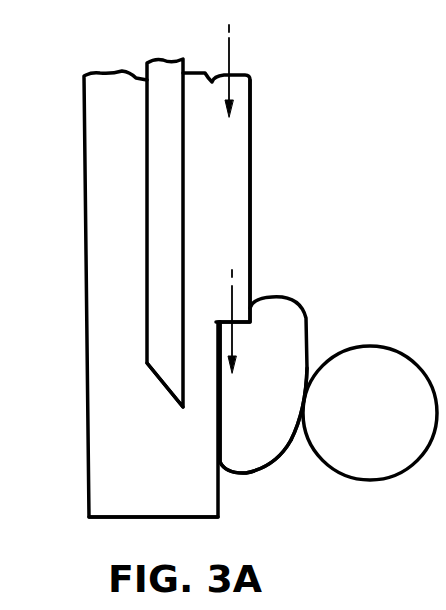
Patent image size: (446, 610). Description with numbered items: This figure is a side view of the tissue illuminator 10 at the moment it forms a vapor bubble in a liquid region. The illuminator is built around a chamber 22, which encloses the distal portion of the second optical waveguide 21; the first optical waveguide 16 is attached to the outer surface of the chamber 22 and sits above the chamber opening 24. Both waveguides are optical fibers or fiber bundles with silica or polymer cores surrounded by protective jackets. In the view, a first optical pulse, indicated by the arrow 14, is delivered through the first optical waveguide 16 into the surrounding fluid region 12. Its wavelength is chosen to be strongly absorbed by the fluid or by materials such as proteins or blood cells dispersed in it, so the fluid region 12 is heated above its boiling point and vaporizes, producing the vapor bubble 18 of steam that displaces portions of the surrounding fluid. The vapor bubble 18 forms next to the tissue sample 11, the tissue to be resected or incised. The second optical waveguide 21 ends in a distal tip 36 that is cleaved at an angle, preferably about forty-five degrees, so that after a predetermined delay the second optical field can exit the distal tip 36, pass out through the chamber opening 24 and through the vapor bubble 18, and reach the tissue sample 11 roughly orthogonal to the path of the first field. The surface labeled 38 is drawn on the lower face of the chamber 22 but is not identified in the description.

The tissue illuminator 10 is at (72, 450).
The tissue sample 11 is at (388, 365).
The fluid region 12 is at (288, 478).
The first optical field 14 is at (234, 340).
The first optical waveguide 16 is at (230, 193).
The vapor bubble 18 is at (243, 476).
The second optical waveguide 21 is at (160, 206).
The chamber 22 is at (98, 152).
The chamber opening 24 is at (213, 418).
The distal tip 36 is at (160, 383).
The bottom surface 38 is at (147, 515).